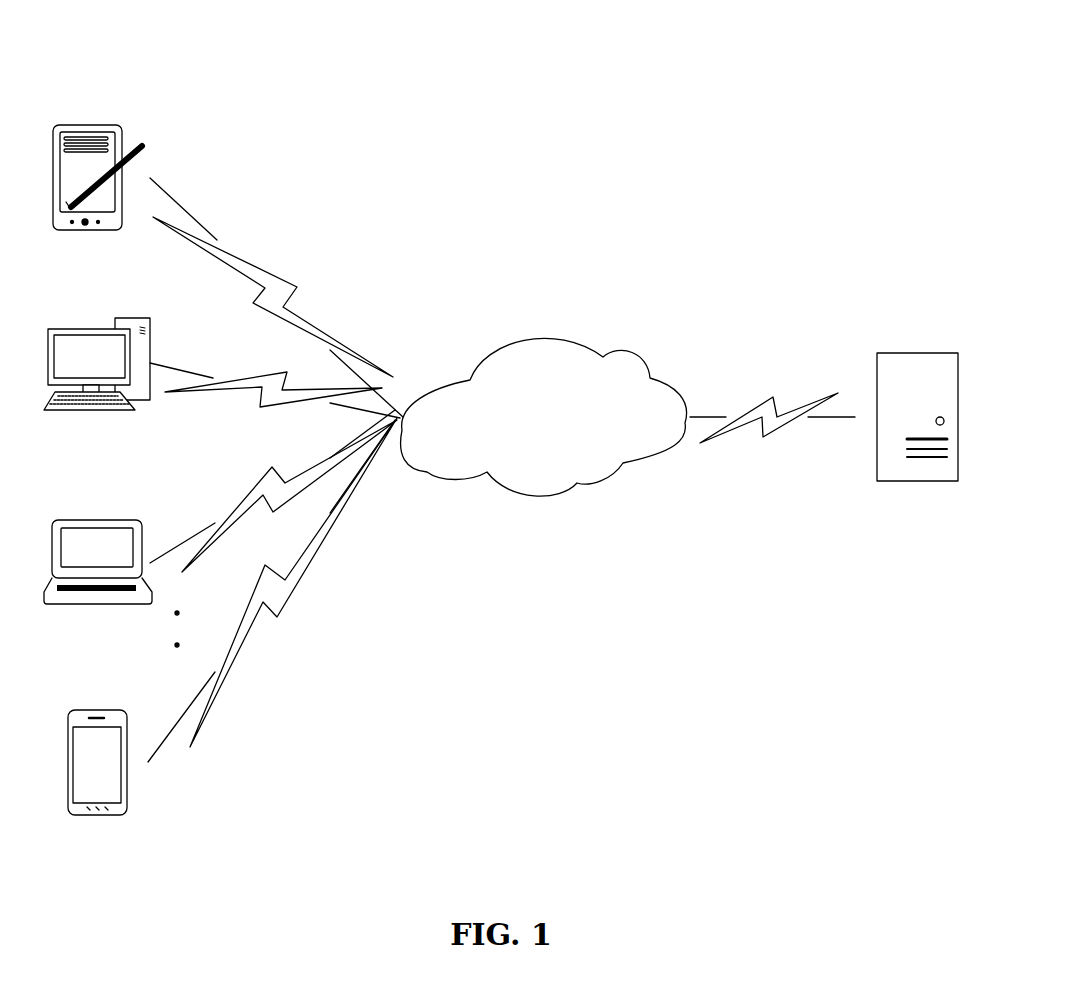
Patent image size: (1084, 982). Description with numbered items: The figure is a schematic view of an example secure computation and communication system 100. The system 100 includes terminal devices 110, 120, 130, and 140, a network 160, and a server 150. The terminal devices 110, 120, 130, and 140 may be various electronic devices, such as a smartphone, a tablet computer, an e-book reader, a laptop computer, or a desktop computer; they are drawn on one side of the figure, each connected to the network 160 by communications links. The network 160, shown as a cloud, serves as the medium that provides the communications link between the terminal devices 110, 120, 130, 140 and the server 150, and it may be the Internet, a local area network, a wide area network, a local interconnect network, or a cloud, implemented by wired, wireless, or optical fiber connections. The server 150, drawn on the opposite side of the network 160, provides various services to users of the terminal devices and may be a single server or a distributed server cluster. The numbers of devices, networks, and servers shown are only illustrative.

The secure computation and communication system 100 is at (576, 89).
The terminal device 110 is at (118, 125).
The terminal device 120 is at (85, 328).
The terminal device 130 is at (88, 518).
The terminal device 140 is at (90, 708).
The server 150 is at (925, 353).
The network 160 is at (560, 333).